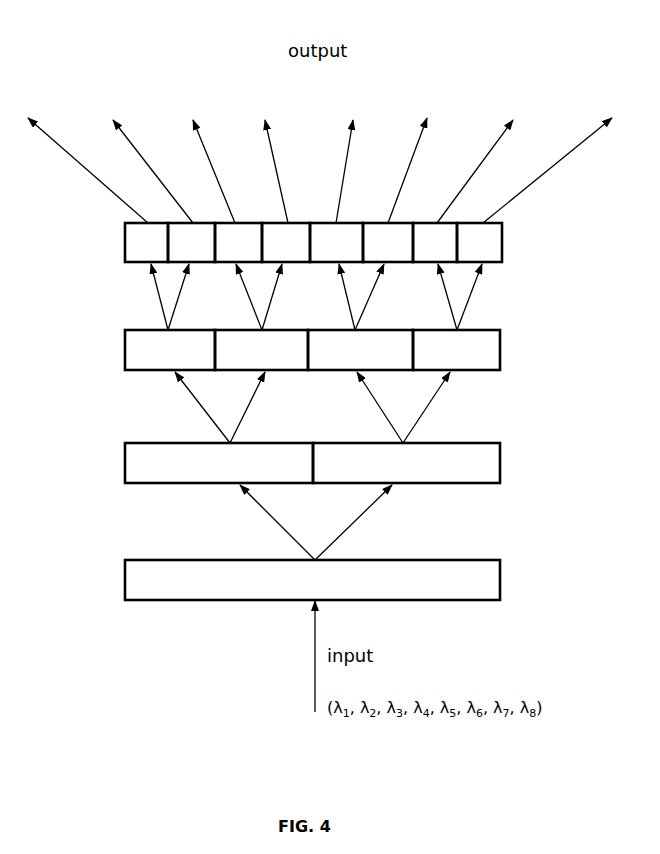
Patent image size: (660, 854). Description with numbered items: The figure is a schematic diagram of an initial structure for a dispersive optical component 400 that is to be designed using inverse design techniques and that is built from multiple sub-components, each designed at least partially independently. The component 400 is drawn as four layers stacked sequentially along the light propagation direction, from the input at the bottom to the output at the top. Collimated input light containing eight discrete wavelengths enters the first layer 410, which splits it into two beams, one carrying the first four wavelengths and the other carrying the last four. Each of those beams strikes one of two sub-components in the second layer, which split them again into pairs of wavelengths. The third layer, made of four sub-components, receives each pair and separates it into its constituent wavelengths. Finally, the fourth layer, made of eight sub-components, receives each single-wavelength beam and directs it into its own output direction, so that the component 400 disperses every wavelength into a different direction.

The dispersive optical component 400 is at (168, 668).
The first layer 410 is at (500, 578).